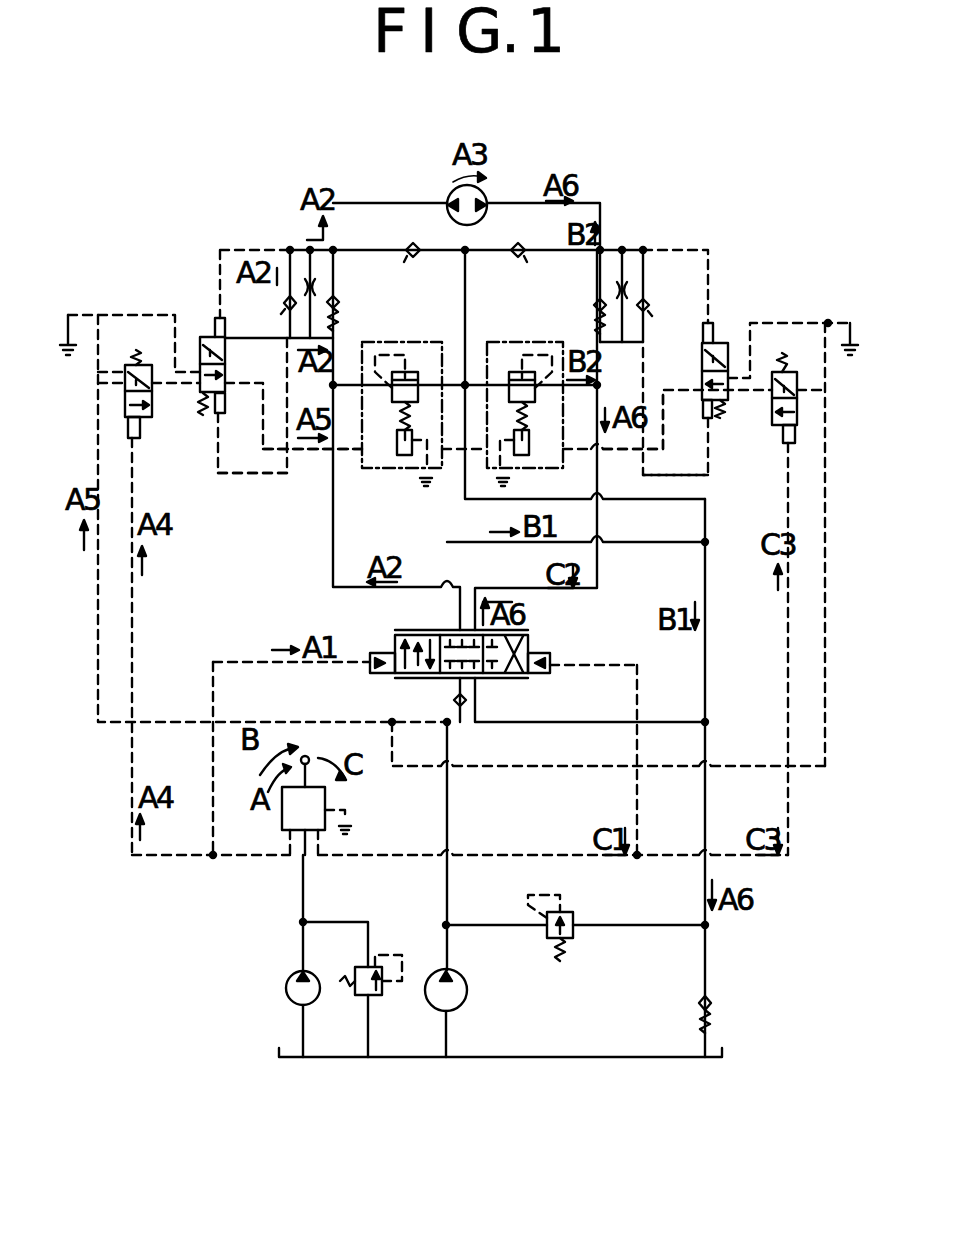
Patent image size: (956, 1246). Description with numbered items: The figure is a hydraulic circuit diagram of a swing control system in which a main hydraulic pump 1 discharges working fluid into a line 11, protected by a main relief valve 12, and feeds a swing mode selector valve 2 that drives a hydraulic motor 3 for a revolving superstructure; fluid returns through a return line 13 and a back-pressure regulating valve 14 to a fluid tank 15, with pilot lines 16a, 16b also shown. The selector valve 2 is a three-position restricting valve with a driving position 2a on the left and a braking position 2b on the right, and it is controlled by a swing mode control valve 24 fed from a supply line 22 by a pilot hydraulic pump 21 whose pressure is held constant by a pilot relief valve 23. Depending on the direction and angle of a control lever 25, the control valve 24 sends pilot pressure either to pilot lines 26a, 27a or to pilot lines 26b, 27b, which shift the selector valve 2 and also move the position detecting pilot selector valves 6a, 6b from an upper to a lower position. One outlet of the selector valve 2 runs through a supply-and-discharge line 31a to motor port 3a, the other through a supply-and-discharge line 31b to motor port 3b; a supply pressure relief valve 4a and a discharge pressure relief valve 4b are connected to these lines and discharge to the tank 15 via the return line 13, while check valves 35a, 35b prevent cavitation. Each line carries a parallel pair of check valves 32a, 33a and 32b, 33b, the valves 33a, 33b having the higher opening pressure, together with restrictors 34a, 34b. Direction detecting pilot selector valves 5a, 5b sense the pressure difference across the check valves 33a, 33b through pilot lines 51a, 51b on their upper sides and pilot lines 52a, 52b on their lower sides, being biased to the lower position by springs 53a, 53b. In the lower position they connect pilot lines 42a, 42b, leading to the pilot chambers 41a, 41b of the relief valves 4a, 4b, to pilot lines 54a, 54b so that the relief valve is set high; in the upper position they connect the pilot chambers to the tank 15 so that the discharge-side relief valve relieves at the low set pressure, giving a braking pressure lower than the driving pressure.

The main hydraulic pump 1 is at (468, 990).
The swing mode selector valve 2 is at (532, 636).
The driving position 2a is at (418, 680).
The braking position 2b is at (506, 680).
The hydraulic motor 3 is at (480, 191).
The port of the hydraulic motor 3a is at (445, 211).
The port of the hydraulic motor 3b is at (489, 211).
The supply pressure relief valve 4a is at (418, 342).
The discharge pressure relief valve 4b is at (503, 342).
The direction detecting pilot selector valve 5a is at (222, 321).
The direction detecting pilot selector valve 5b is at (704, 346).
The position detecting pilot selector valve 6a is at (128, 368).
The position detecting pilot selector valve 6b is at (792, 372).
The line 11 is at (448, 798).
The main relief valve 12 is at (572, 915).
The return line 13 is at (706, 941).
The back-pressure regulating valve 14 is at (709, 1003).
The fluid tank 15 is at (740, 1040).
The pilot line 16a is at (98, 585).
The pilot line 16b is at (825, 648).
The pilot hydraulic pump 21 is at (290, 1002).
The supply line 22 is at (302, 896).
The pilot relief valve 23 is at (386, 997).
The swing mode control valve 24 is at (326, 796).
The control lever 25 is at (307, 757).
The pilot line 26a is at (213, 790).
The pilot line 26b is at (668, 806).
The pilot line 27a is at (132, 762).
The pilot line 27b is at (788, 826).
The supply-and-discharge line 31a is at (331, 558).
The supply-and-discharge line 31b is at (597, 580).
The check valve 32a is at (285, 303).
The check valve 32b is at (649, 305).
The check valve 33a is at (336, 310).
The check valve 33b is at (598, 311).
The restrictor 34a is at (316, 288).
The restrictor 34b is at (616, 290).
The check valve 35a is at (412, 258).
The check valve 35b is at (519, 258).
The pilot chamber 41a is at (405, 458).
The pilot chamber 41b is at (519, 458).
The pilot line 42a is at (313, 452).
The pilot line 42b is at (620, 455).
The pilot line 51a is at (240, 248).
The pilot line 51b is at (676, 248).
The pilot line 52a is at (240, 474).
The pilot line 52b is at (690, 478).
The spring 53a is at (216, 426).
The spring 53b is at (712, 424).
The pilot line 54a is at (203, 404).
The pilot line 54b is at (722, 418).